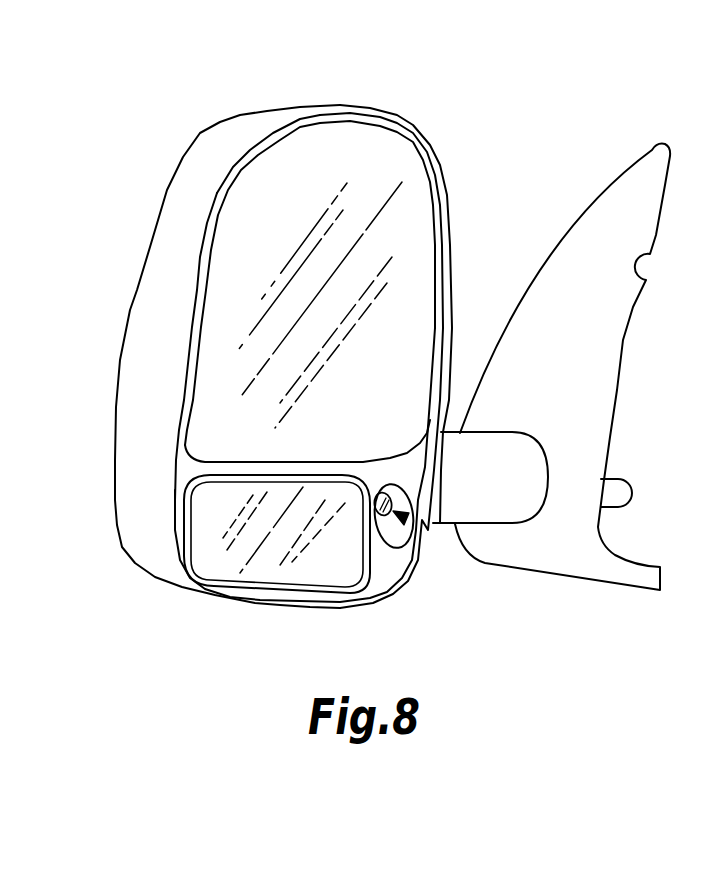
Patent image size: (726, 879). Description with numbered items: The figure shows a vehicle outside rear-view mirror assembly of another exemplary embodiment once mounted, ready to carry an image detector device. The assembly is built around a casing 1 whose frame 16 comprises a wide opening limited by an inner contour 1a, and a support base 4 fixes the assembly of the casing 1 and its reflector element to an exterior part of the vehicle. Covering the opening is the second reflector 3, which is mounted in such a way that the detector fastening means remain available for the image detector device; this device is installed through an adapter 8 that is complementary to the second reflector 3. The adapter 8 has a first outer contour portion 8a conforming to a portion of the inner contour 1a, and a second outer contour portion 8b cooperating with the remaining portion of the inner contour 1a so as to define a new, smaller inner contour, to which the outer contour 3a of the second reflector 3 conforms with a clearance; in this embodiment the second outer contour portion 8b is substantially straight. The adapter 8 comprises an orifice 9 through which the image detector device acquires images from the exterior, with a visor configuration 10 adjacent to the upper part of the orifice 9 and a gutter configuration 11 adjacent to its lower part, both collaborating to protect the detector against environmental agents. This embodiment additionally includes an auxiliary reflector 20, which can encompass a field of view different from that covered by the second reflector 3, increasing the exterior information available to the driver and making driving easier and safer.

The casing 1 is at (180, 230).
The inner contour 1a is at (435, 158).
The second reflector 3 is at (408, 293).
The outer contour 3a is at (433, 205).
The support base 4 is at (598, 330).
The adapter 8 is at (373, 604).
The first outer contour portion 8a is at (417, 577).
The second outer contour portion 8b is at (384, 458).
The orifice 9 is at (407, 518).
The visor configuration 10 is at (392, 482).
The gutter configuration 11 is at (393, 533).
The frame 16 is at (256, 150).
The auxiliary reflector 20 is at (263, 560).